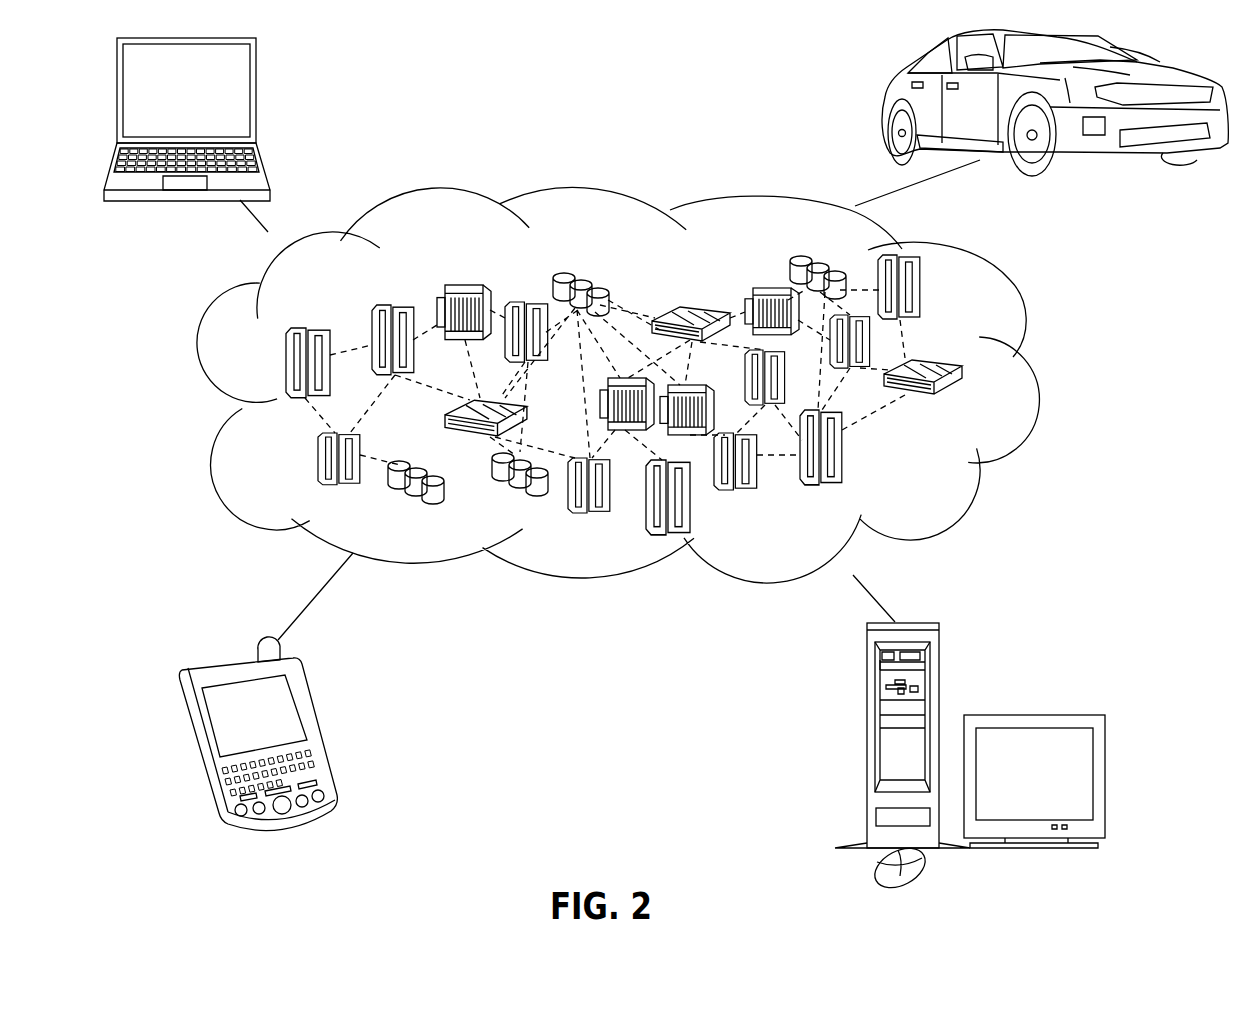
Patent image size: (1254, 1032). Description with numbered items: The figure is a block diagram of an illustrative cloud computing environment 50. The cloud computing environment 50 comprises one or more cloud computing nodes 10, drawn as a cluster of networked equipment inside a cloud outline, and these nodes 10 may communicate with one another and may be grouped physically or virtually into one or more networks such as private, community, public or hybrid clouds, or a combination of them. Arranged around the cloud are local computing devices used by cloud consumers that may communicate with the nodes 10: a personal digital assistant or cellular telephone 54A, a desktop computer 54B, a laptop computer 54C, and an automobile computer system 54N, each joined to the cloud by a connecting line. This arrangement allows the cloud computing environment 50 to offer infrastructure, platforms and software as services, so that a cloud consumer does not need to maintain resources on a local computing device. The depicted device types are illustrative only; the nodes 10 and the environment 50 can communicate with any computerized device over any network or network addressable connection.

The cloud computing nodes 10 is at (940, 473).
The cloud computing environment 50 is at (1032, 375).
The personal digital assistant (PDA) or cellular telephone 54A is at (310, 697).
The desktop computer 54B is at (866, 681).
The laptop computer 54C is at (256, 74).
The automobile computer system 54N is at (887, 82).